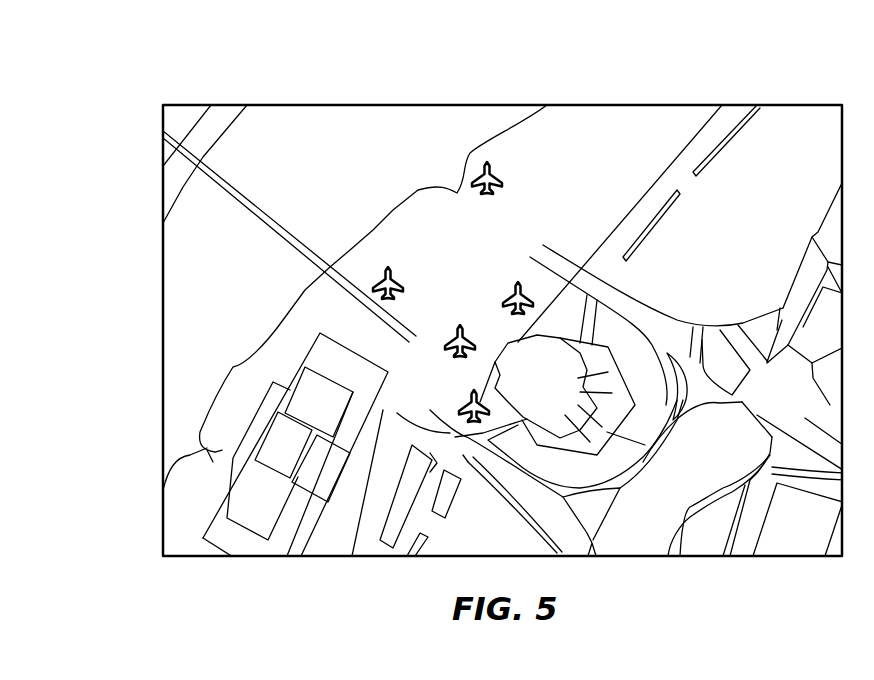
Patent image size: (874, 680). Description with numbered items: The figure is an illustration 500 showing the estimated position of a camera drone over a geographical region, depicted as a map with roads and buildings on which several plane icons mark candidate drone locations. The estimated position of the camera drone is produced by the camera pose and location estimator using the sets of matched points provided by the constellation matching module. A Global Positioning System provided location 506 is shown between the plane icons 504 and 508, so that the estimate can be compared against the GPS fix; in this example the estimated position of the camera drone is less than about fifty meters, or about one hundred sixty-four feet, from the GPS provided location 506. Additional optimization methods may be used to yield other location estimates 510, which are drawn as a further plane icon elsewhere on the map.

The illustration 500 is at (523, 39).
The other location estimates 510 is at (497, 172).
The plane icon 508 is at (388, 268).
The plane icon 504 is at (518, 282).
The GPS provided location 506 is at (445, 336).